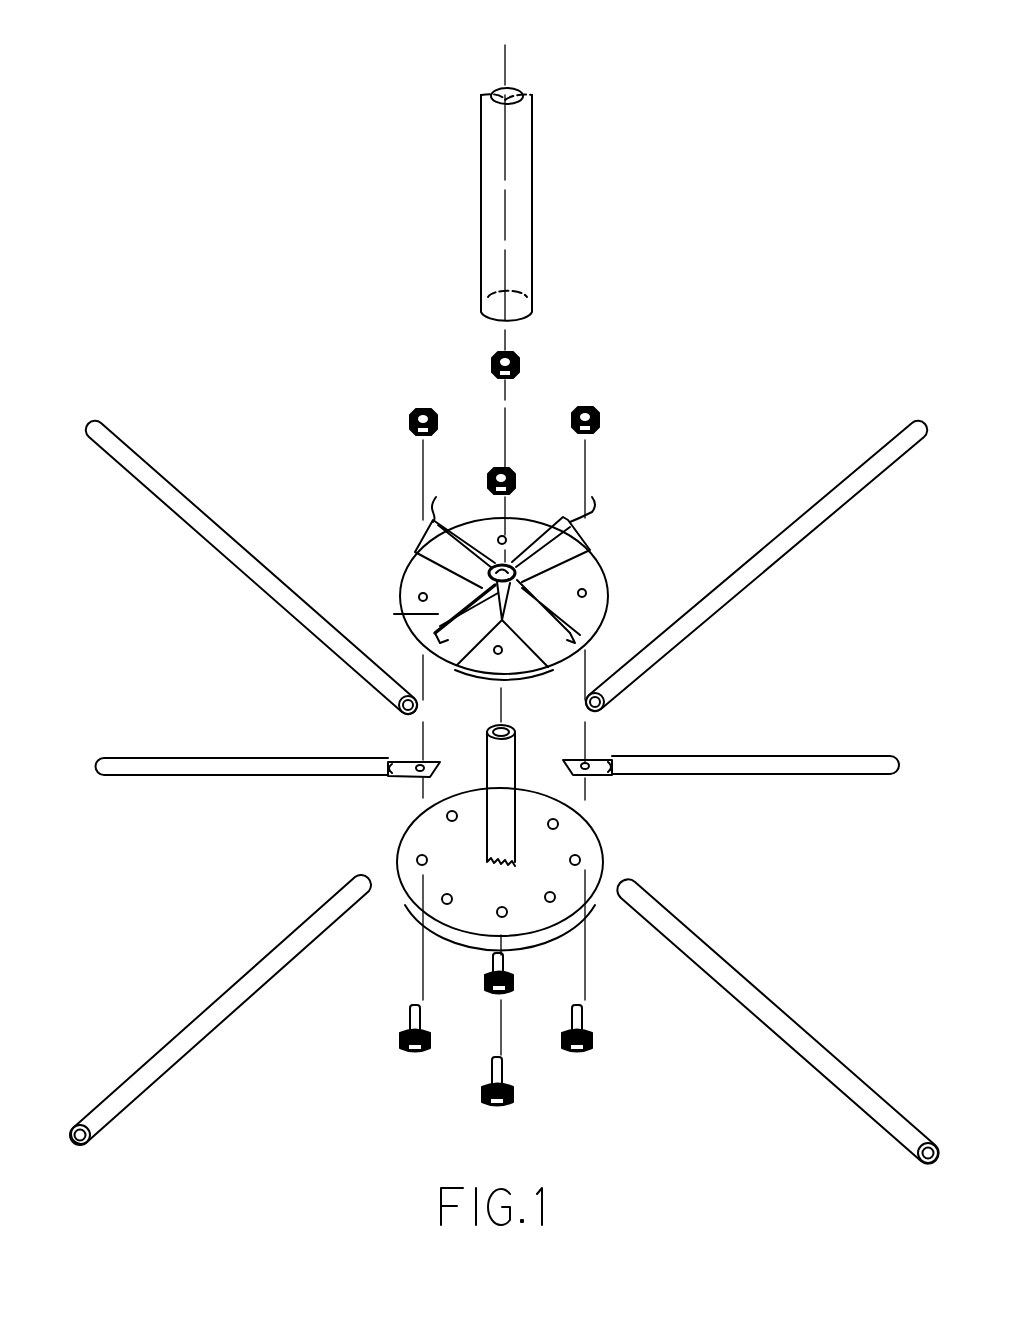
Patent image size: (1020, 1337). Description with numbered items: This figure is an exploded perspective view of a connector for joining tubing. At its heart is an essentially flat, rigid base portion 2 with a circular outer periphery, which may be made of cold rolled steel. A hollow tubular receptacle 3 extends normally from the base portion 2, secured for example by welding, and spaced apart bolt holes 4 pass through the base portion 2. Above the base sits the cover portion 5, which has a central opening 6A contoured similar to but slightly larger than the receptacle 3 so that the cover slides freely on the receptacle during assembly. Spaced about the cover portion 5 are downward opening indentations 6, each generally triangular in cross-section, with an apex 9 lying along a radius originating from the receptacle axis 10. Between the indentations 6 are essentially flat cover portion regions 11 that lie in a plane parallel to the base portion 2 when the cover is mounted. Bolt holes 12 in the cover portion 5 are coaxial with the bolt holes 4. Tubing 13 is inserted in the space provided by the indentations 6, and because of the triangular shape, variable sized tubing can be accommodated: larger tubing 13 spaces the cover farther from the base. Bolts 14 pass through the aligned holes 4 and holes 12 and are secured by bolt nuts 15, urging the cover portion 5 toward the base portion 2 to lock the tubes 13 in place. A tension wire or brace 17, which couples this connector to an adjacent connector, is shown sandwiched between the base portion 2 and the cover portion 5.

The base portion 2 is at (408, 890).
The hollow tubular receptacle 3 is at (518, 755).
The bolt holes 4 is at (503, 812).
The cover portion 5 is at (418, 556).
The downward opening indentations 6 is at (436, 645).
The central opening 6A is at (514, 566).
The apex 9 is at (493, 598).
The receptacle axis 10 is at (505, 62).
The cover portion regions 11 is at (572, 577).
The bolt holes 12 is at (613, 598).
The tubing 13 is at (531, 170).
The bolts 14 is at (513, 977).
The bolt nuts 15 is at (519, 362).
The tension wire or brace 17 is at (197, 782).